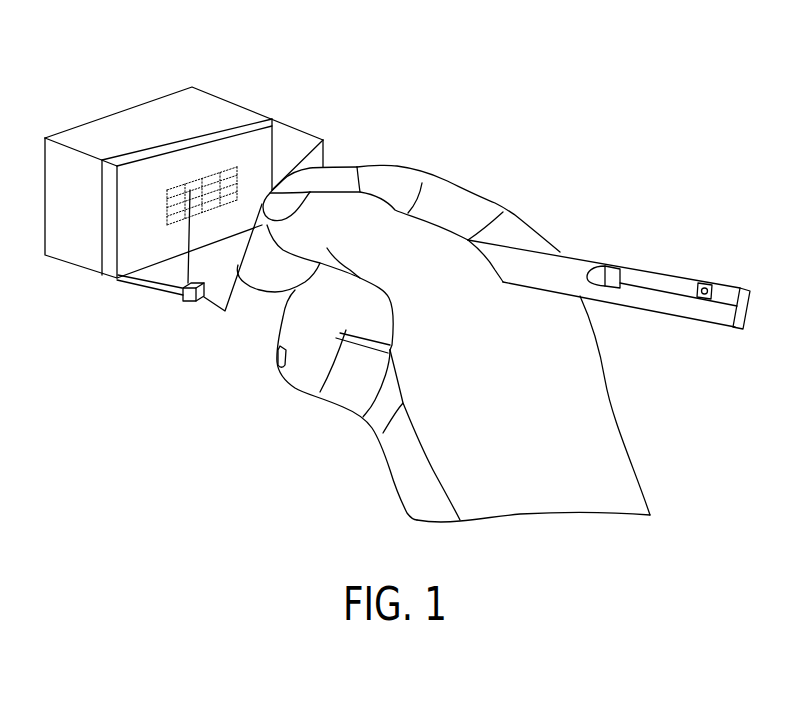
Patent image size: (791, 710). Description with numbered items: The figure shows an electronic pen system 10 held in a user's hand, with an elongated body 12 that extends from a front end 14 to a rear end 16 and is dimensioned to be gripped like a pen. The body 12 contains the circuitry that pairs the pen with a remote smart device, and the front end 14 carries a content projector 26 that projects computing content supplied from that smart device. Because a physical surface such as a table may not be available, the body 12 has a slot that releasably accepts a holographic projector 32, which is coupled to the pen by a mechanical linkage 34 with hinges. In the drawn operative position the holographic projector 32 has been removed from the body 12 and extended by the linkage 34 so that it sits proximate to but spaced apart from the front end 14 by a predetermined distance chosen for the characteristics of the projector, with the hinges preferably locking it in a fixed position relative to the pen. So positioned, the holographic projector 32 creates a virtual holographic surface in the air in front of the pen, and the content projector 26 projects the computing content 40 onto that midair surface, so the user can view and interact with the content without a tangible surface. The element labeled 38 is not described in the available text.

The electronic pen system 10 is at (304, 95).
The body 12 is at (650, 278).
The front end 14 is at (222, 187).
The rear end 16 is at (698, 315).
The content projector 26 is at (240, 196).
The holographic projector 32 is at (190, 304).
The mechanical linkage 34 is at (225, 311).
The lid 38 is at (143, 156).
The computing content 40 is at (130, 223).